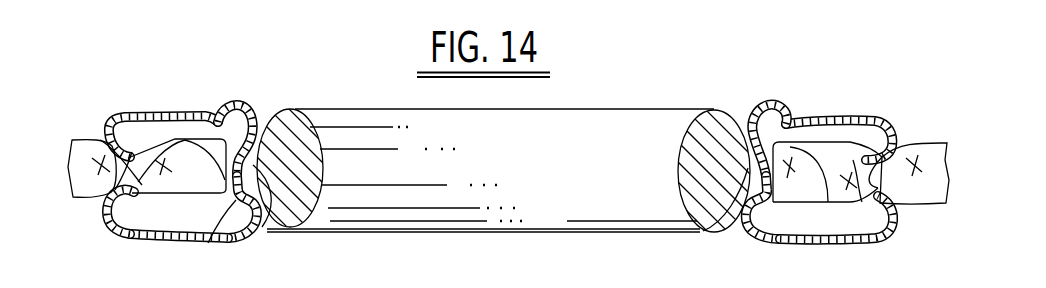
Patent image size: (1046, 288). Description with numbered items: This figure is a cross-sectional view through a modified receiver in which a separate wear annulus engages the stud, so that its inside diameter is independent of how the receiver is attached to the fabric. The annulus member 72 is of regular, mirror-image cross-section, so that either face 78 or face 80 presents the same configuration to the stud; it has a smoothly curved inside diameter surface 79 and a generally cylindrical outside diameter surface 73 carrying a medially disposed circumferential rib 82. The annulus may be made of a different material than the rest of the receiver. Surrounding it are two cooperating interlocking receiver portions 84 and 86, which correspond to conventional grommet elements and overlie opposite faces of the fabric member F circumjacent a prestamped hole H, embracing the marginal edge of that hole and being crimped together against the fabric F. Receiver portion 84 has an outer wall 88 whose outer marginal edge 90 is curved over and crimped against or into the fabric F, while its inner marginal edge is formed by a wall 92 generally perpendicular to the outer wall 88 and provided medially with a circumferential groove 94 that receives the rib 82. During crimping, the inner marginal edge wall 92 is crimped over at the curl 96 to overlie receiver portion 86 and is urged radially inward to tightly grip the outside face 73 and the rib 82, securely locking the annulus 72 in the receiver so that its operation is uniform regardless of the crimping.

The annulus member 72 is at (284, 150).
The outside diameter surface 73 is at (759, 237).
The face of the receiver 78 is at (604, 240).
The inside diameter surface 79 is at (328, 160).
The face of the receiver 80 is at (620, 80).
The circumferential rib 82 is at (256, 173).
The receiver portion 84 is at (823, 243).
The receiver portion 86 is at (155, 111).
The outer wall 88 is at (150, 241).
The outer marginal edge 90 is at (105, 211).
The inner marginal edge wall 92 is at (756, 106).
The circumferential groove 94 is at (702, 228).
The curl 96 is at (235, 103).
The fabric member F is at (90, 137).
The hole H is at (228, 193).